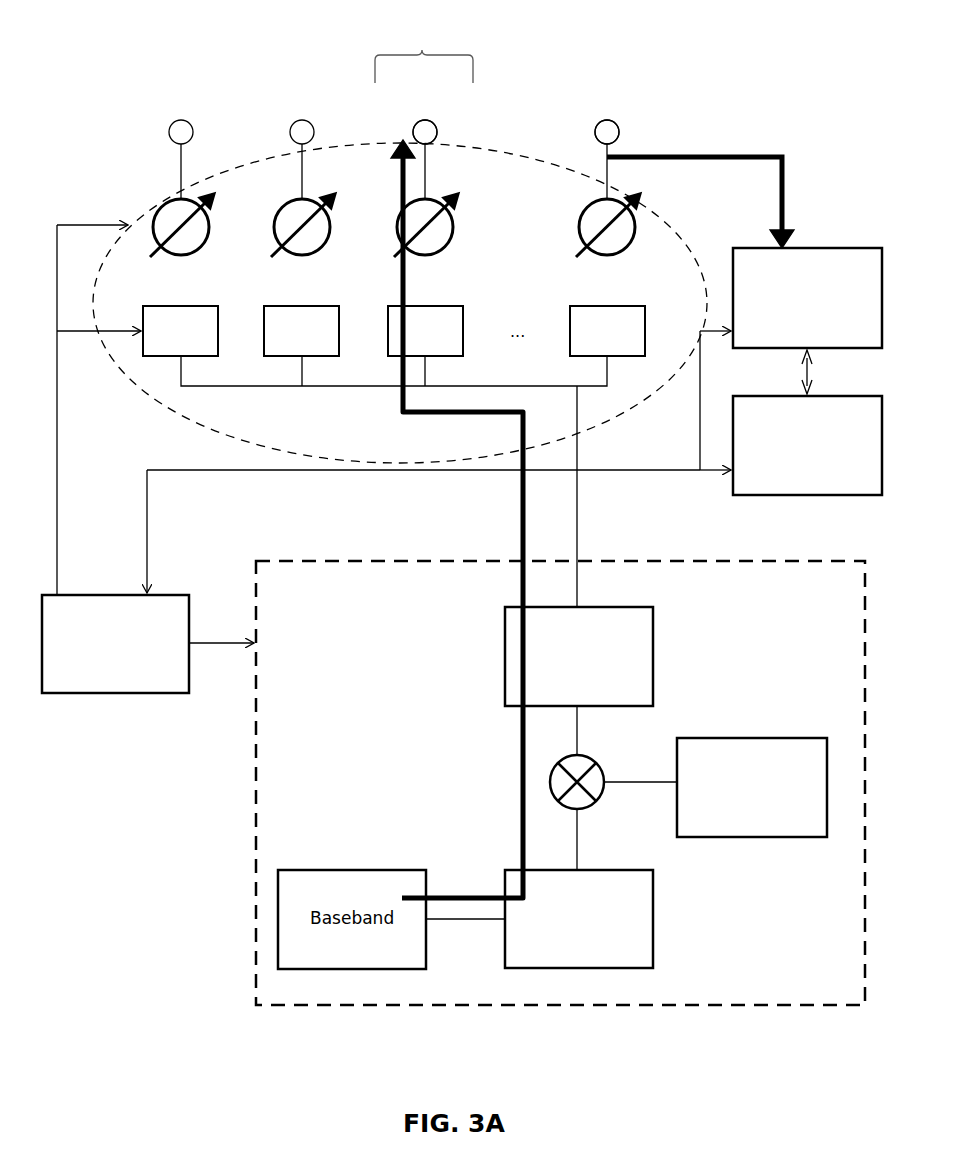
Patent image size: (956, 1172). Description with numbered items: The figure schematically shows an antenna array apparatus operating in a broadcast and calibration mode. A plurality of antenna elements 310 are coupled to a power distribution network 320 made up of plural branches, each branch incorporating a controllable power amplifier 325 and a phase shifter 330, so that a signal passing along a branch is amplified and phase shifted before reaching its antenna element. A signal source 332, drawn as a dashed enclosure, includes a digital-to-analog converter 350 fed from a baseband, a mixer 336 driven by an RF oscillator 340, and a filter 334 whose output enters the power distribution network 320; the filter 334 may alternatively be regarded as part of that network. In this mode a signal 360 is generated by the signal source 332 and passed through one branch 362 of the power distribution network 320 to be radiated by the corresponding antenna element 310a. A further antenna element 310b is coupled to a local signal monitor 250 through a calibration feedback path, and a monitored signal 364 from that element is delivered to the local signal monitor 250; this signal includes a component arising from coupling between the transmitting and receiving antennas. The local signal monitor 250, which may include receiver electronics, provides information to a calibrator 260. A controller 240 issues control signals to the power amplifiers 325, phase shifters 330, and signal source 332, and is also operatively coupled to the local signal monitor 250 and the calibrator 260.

The controller 240 is at (148, 644).
The local signal monitor 250 is at (807, 298).
The calibrator 260 is at (807, 422).
The antenna elements 310 is at (163, 110).
The antenna element 310a is at (419, 123).
The further antenna element 310b is at (606, 123).
The power distribution network 320 is at (375, 463).
The power amplifiers 325 is at (280, 305).
The phase shifters 330 is at (293, 201).
The signal source 332 is at (320, 561).
The filter 334 is at (579, 656).
The mixer 336 is at (599, 765).
The RF oscillator 340 is at (752, 787).
The digital-to-analog converter 350 is at (579, 919).
The signal 360 is at (520, 536).
The branch 362 is at (422, 48).
The monitored signal 364 is at (700, 190).